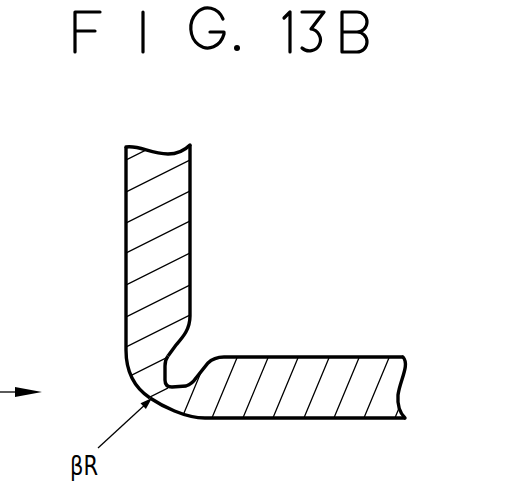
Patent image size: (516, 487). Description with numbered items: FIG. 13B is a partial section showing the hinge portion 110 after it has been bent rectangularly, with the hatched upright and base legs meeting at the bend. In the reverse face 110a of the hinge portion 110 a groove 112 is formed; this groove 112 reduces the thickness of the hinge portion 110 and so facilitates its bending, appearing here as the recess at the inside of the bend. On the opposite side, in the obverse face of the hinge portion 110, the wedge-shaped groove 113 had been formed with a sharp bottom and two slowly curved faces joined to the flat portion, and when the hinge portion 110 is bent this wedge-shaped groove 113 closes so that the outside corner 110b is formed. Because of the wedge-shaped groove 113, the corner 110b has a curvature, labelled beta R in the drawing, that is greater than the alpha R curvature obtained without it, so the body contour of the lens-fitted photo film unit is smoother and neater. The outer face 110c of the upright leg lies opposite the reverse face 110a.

The hinge portion 110 is at (114, 359).
The reverse face 110a is at (193, 295).
The corner 110b is at (164, 409).
The outer face of upright portion 110c is at (82, 248).
The groove 112 is at (189, 383).
The wedge-shaped groove 113 is at (150, 397).